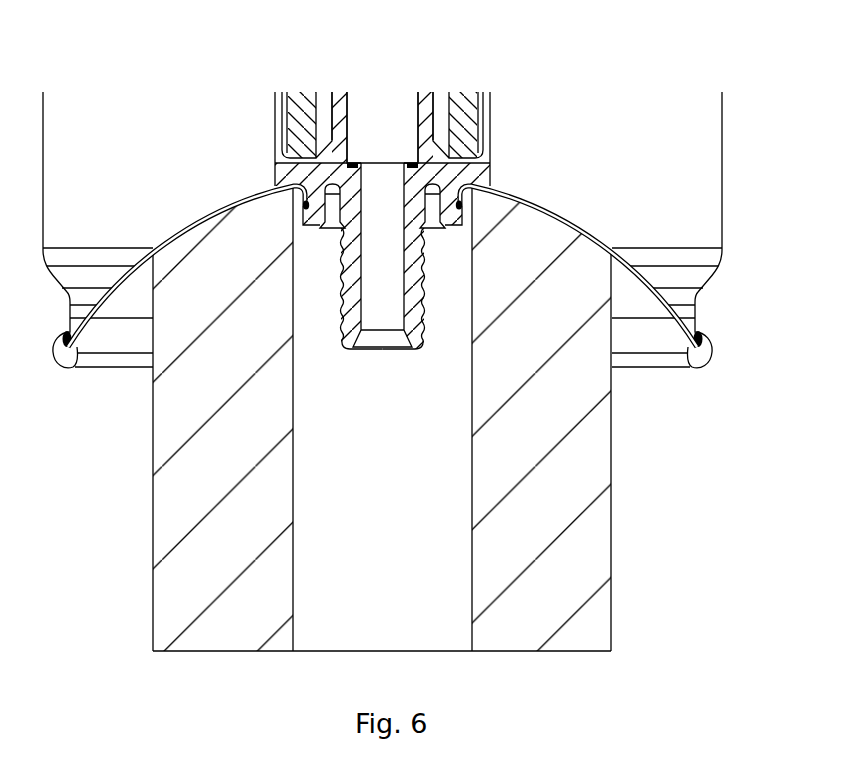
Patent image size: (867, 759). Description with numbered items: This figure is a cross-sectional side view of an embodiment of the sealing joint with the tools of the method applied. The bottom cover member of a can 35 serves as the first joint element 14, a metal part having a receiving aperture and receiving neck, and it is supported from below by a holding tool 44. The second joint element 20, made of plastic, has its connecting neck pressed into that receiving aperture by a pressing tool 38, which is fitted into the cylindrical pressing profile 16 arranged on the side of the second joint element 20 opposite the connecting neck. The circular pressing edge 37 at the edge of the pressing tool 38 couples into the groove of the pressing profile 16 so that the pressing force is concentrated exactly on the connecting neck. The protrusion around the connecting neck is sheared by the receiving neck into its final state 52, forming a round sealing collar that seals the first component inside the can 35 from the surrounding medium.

The first joint element 14 is at (588, 232).
The pressing profile 16 is at (442, 102).
The second joint element 20 is at (497, 156).
The can 35 is at (724, 208).
The pressing edge 37 is at (313, 161).
The pressing tool 38 is at (340, 122).
The holding tool 44 is at (293, 612).
The state of the protrusion 52 is at (463, 210).